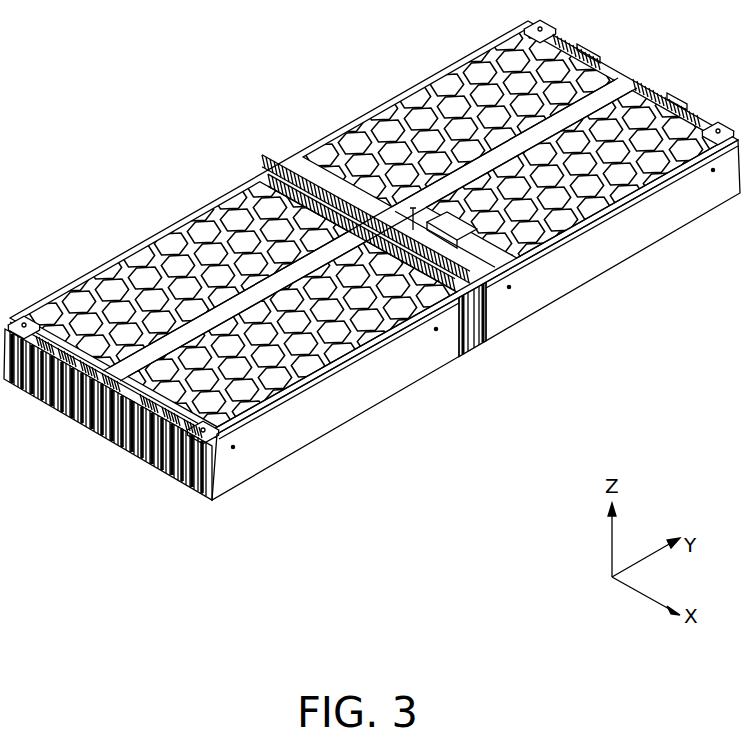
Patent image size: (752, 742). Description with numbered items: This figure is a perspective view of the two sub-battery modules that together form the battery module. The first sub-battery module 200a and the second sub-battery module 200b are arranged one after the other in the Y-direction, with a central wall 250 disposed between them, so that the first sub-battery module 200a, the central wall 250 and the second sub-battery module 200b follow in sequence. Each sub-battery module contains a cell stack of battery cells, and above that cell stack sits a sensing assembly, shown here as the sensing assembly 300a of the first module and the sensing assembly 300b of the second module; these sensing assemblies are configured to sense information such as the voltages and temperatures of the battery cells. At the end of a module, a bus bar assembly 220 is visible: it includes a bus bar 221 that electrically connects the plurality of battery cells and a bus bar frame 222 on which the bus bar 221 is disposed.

The sensing assembly 300a is at (163, 241).
The sensing assembly 300b is at (412, 93).
The first sub-battery module 200a is at (344, 406).
The second sub-battery module 200b is at (626, 252).
The central wall 250 is at (473, 348).
The bus bar assembly 220 is at (108, 440).
The bus bar 221 is at (92, 440).
The bus bar frame 222 is at (128, 452).